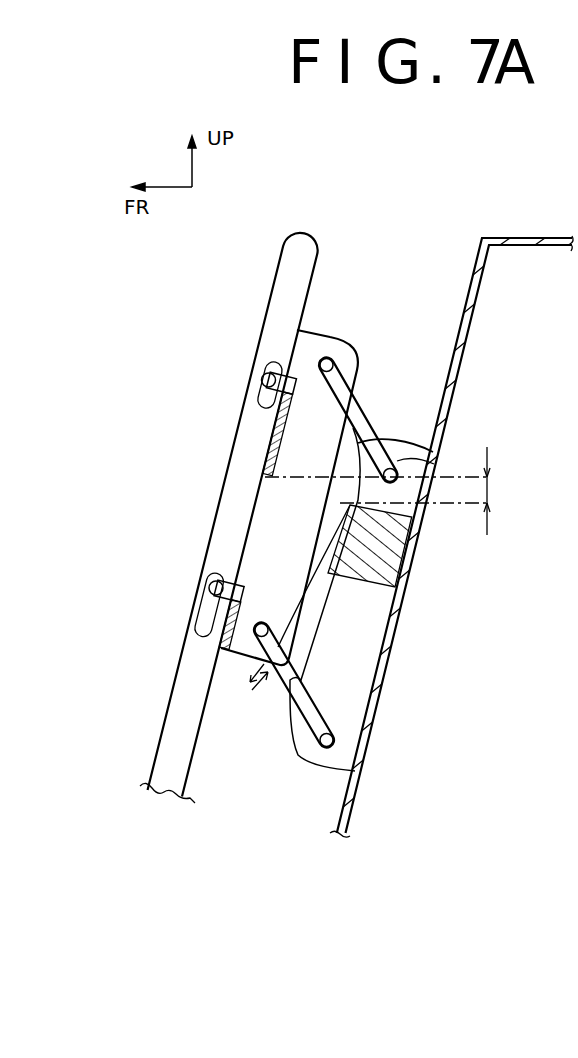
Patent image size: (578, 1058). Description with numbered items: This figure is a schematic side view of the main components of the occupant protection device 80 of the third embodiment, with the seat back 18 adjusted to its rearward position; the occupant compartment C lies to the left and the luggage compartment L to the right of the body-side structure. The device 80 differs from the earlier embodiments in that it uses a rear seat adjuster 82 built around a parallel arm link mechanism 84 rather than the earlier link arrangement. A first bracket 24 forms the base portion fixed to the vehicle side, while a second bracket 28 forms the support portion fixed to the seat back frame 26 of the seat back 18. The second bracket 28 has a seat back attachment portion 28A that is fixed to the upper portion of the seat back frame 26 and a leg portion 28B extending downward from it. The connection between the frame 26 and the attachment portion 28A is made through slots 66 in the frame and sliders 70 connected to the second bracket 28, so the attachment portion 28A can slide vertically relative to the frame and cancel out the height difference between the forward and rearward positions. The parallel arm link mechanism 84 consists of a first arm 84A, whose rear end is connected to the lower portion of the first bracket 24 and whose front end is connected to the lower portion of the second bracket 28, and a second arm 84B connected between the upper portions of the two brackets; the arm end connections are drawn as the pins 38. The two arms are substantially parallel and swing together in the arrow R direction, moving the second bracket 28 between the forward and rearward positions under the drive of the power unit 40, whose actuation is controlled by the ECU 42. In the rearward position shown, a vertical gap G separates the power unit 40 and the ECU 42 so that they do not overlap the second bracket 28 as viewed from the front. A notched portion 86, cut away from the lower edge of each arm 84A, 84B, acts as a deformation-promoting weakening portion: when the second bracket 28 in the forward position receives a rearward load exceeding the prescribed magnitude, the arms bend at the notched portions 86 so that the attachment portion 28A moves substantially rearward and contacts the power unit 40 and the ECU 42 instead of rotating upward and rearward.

The occupant protection device 80 is at (413, 242).
The seat back frame 26 is at (225, 516).
The seat back 18 is at (269, 310).
The second bracket 28 is at (338, 336).
The seat back attachment portion 28A is at (313, 328).
The leg portion 28B is at (231, 650).
The bolt 38 is at (346, 345).
The slot 66 is at (258, 408).
The slider 70 is at (262, 380).
The rear seat adjuster 82 is at (513, 378).
The parallel arm link mechanism 84 is at (429, 385).
The first arm 84A is at (402, 446).
The second arm 84B is at (341, 386).
The first bracket 24 is at (405, 422).
The notched portion 86 is at (350, 424).
The power unit 40 is at (432, 546).
The ECU 42 is at (397, 572).
The gap G is at (392, 491).
The arrow R direction R is at (262, 693).
The occupant compartment C is at (138, 539).
The luggage compartment L is at (440, 686).